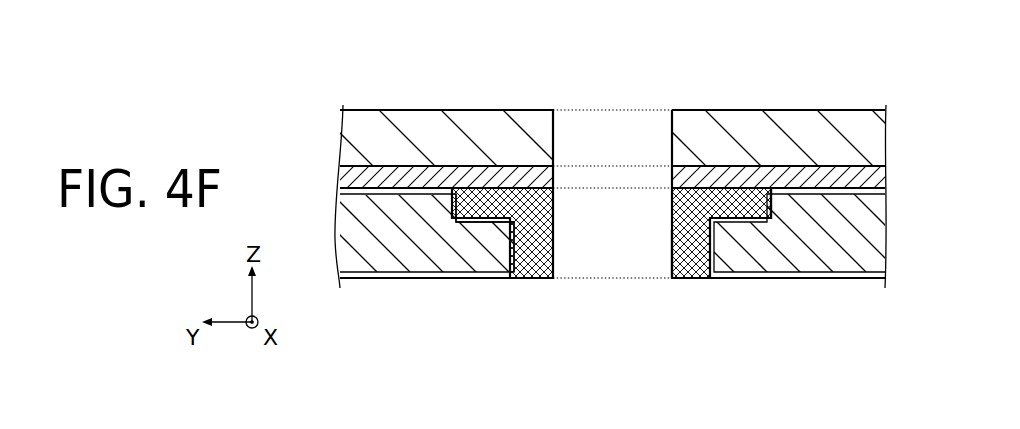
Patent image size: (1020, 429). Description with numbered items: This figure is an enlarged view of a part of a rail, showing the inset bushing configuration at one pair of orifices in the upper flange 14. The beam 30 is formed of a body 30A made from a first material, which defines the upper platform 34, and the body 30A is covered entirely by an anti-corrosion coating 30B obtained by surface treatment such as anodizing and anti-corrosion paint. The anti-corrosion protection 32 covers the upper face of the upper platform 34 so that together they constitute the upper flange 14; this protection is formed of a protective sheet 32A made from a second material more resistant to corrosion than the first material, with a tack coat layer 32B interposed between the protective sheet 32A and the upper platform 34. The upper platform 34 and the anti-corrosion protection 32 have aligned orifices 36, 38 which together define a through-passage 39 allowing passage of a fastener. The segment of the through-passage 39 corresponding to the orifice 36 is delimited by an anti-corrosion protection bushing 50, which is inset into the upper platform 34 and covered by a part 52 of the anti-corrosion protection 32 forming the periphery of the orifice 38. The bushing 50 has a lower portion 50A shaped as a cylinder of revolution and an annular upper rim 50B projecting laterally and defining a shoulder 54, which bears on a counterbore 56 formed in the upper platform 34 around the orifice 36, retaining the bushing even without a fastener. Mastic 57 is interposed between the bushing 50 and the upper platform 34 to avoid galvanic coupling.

The upper flange 14 is at (321, 104).
The beam 30 is at (448, 332).
The body 30A is at (358, 247).
The anti-corrosion coating 30B is at (402, 190).
The anti-corrosion protection 32 is at (468, 70).
The protective sheet 32A is at (369, 128).
The tack coat layer 32B is at (413, 183).
The upper platform 34 is at (800, 272).
The orifice 36 is at (527, 243).
The orifice 38 is at (668, 177).
The through-passage 39 is at (615, 135).
The anti-corrosion protection bushing 50 is at (583, 332).
The lower portion 50A is at (530, 278).
The upper rim 50B is at (490, 278).
The part of the anti-corrosion protection 52 is at (712, 222).
The shoulder 54 is at (740, 223).
The counterbore 56 is at (757, 213).
The mastic 57 is at (690, 272).